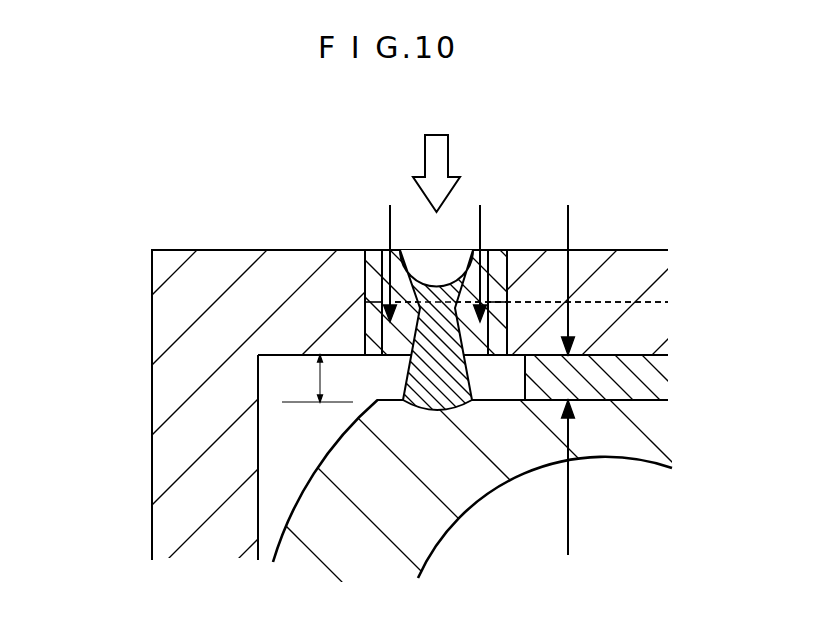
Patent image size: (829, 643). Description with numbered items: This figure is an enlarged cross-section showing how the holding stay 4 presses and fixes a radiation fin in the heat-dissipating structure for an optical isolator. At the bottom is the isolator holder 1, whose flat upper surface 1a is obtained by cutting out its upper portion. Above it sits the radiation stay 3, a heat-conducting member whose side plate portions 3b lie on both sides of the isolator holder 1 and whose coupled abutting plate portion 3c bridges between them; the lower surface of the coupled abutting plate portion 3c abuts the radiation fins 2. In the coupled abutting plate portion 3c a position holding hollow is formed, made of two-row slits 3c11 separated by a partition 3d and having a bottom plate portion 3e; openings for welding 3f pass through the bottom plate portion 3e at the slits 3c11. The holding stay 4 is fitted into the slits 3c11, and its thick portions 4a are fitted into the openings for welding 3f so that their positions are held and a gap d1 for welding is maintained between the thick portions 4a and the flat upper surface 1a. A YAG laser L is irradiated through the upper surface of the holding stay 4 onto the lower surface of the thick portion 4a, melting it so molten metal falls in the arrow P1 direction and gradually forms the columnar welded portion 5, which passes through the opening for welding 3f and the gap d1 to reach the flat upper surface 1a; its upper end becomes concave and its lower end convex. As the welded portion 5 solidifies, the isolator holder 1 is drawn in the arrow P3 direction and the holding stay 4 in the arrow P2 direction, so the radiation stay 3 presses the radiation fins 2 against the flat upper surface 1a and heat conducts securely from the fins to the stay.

The isolator holder 1 is at (538, 437).
The flat upper surface 1a is at (485, 395).
The radiation fins 2 is at (615, 373).
The radiation stay 3 is at (140, 243).
The side plate portions 3b is at (222, 530).
The coupled abutting plate portion 3c is at (347, 250).
The slits 3c11 is at (366, 335).
The partition 3d is at (657, 277).
The bottom plate portion 3e is at (647, 327).
The openings for welding 3f is at (365, 342).
The holding stay 4 is at (487, 257).
The thick portions 4a is at (567, 363).
The welded portion 5 is at (427, 405).
The YAG laser L is at (442, 137).
The arrow P1 direction P1 is at (480, 203).
The arrow P2 direction P2 is at (568, 223).
The arrow P3 direction P3 is at (570, 500).
The gap for welding d1 is at (317, 378).